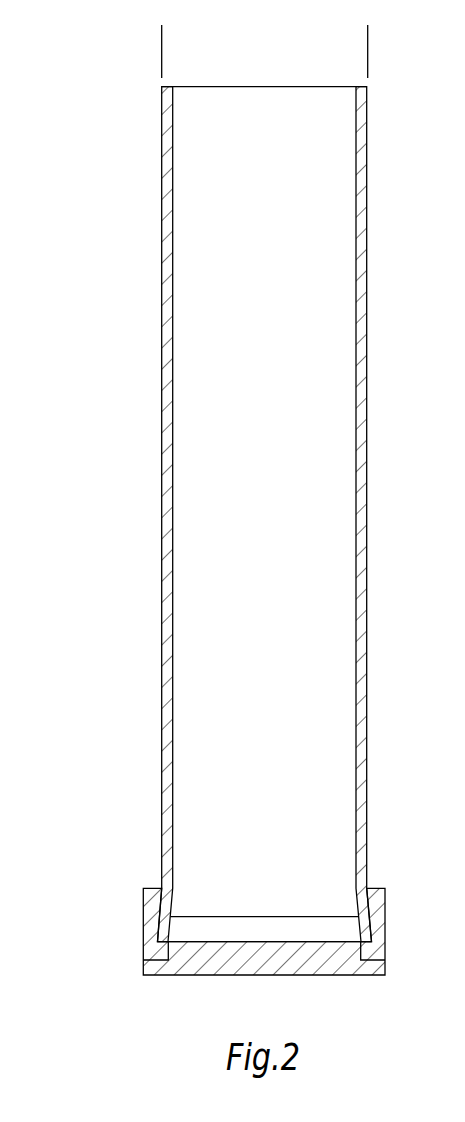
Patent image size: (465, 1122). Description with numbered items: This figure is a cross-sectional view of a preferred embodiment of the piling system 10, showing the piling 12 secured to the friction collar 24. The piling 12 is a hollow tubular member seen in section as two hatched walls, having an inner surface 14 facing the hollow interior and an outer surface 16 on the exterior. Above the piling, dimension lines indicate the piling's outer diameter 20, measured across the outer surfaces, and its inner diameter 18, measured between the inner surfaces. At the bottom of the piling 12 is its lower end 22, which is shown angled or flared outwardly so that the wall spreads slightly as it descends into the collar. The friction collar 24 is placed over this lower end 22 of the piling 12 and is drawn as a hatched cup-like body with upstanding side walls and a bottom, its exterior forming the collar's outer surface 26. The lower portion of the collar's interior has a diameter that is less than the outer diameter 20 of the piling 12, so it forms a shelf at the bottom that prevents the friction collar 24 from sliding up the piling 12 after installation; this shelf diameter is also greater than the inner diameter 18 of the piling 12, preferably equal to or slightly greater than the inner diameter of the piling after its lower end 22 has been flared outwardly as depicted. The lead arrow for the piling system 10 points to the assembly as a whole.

The piling system 10 is at (122, 270).
The piling 12 is at (367, 501).
The inner surface 14 is at (280, 469).
The outer surface 16 is at (367, 595).
The inner diameter 18 is at (356, 169).
The outer diameter 20 is at (368, 47).
The lower end 22 is at (166, 932).
The friction collar 24 is at (385, 928).
The outer surface 26 is at (385, 891).